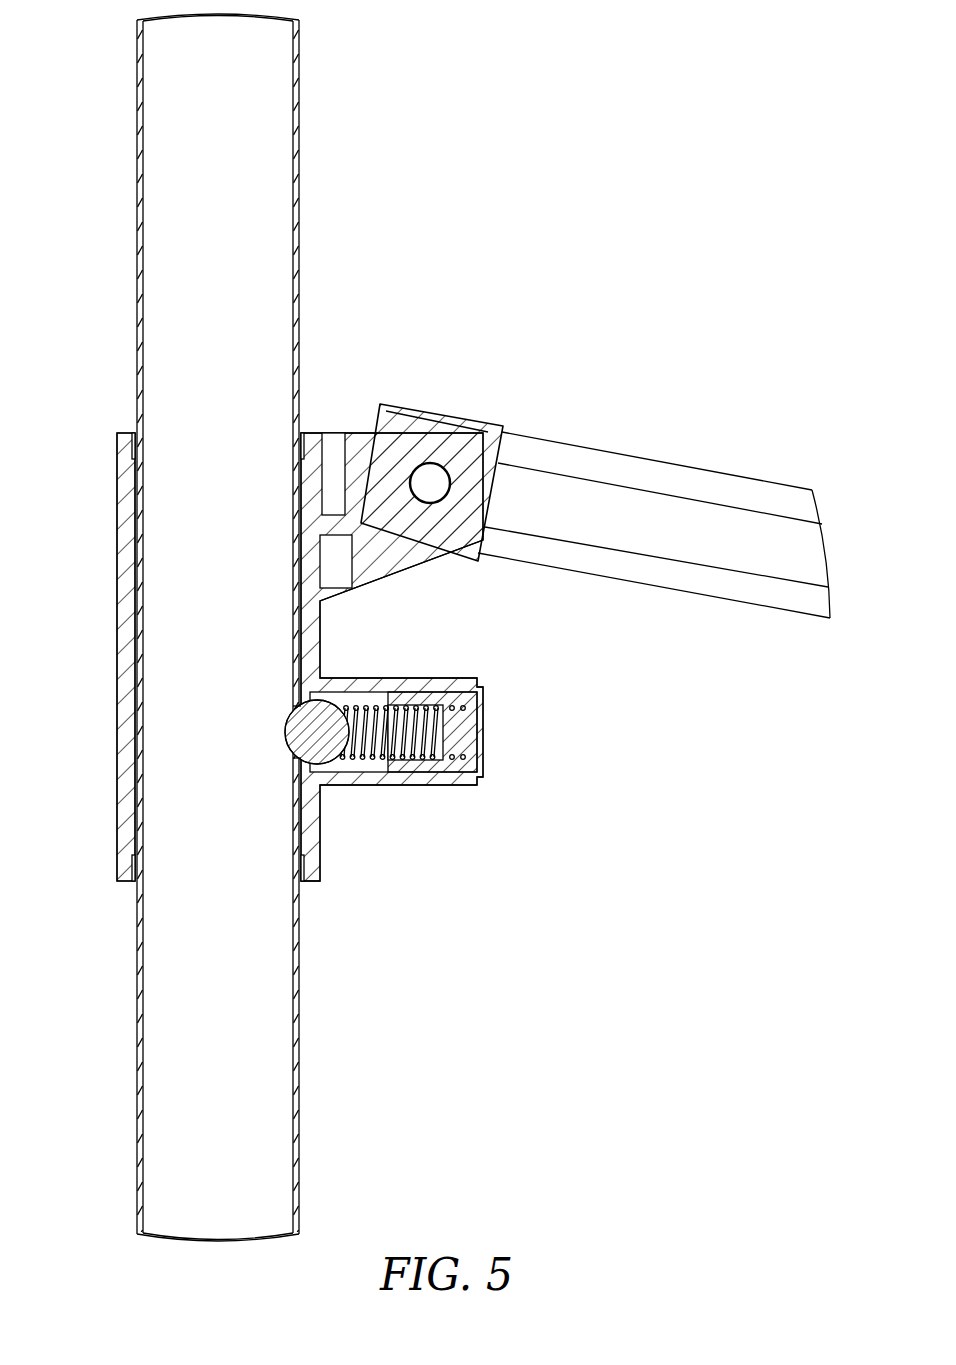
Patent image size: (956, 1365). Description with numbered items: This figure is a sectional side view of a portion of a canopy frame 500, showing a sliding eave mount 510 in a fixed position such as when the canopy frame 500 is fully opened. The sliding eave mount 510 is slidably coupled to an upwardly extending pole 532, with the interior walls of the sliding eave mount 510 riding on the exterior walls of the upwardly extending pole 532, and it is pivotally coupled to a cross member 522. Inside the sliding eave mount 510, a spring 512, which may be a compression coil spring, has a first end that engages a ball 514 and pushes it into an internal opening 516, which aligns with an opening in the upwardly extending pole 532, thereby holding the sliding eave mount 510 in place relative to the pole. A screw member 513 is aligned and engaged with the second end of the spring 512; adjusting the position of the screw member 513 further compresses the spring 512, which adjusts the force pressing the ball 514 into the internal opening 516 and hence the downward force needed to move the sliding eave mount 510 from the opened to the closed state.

The canopy frame 500 is at (518, 242).
The sliding eave mount 510 is at (116, 790).
The spring 512 is at (378, 708).
The screw member 513 is at (477, 738).
The ball 514 is at (325, 747).
The internal opening 516 is at (280, 742).
The cross member 522 is at (635, 465).
The upwardly extending pole 532 is at (298, 993).